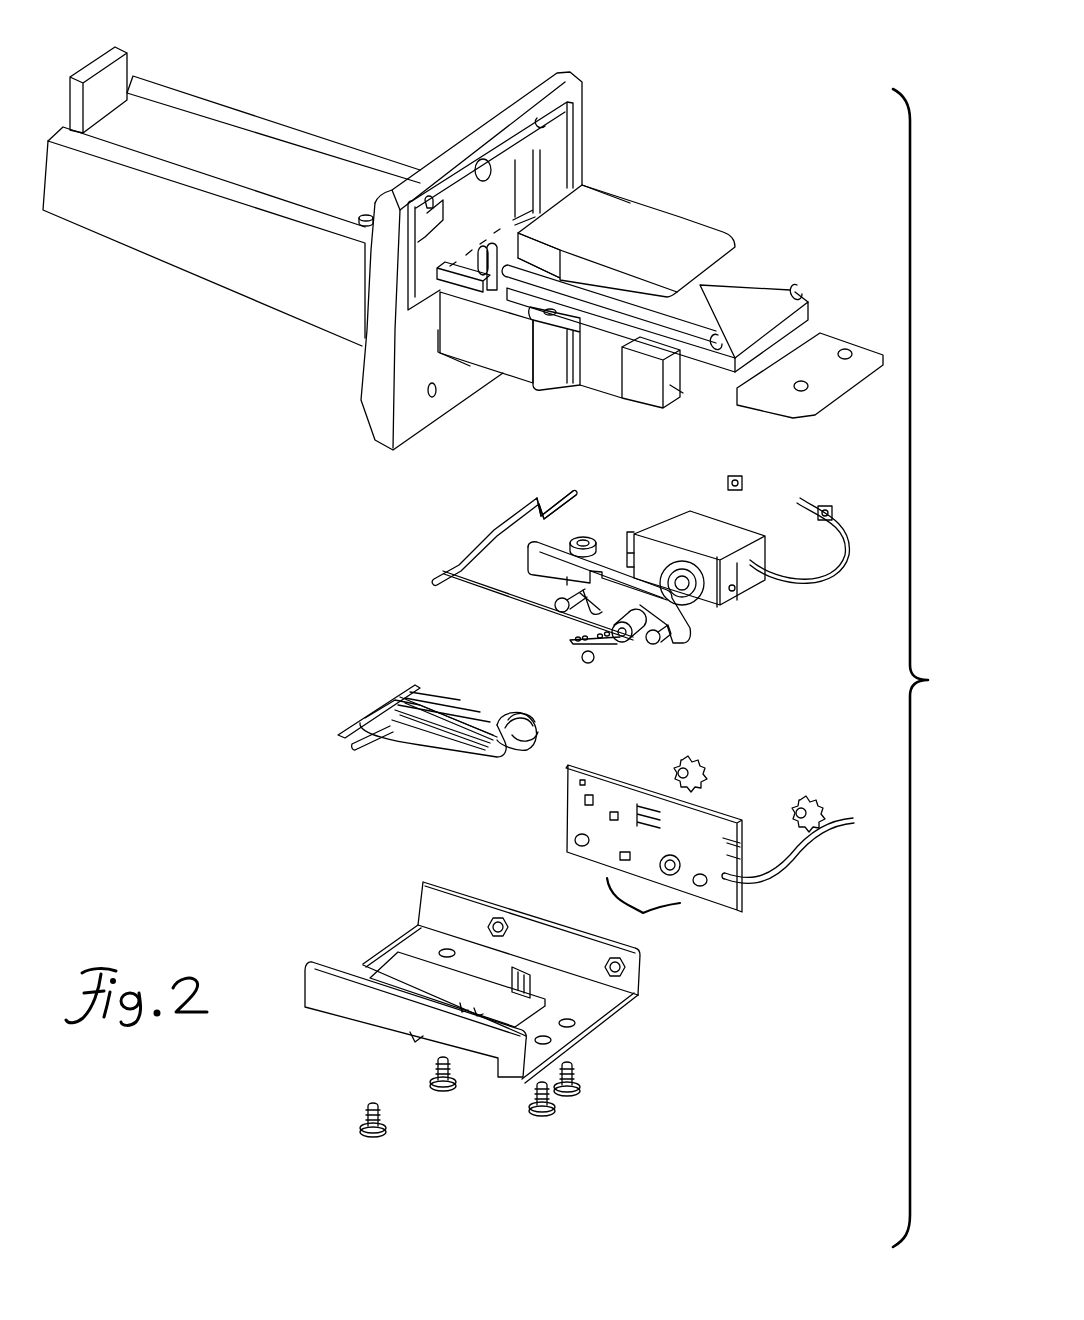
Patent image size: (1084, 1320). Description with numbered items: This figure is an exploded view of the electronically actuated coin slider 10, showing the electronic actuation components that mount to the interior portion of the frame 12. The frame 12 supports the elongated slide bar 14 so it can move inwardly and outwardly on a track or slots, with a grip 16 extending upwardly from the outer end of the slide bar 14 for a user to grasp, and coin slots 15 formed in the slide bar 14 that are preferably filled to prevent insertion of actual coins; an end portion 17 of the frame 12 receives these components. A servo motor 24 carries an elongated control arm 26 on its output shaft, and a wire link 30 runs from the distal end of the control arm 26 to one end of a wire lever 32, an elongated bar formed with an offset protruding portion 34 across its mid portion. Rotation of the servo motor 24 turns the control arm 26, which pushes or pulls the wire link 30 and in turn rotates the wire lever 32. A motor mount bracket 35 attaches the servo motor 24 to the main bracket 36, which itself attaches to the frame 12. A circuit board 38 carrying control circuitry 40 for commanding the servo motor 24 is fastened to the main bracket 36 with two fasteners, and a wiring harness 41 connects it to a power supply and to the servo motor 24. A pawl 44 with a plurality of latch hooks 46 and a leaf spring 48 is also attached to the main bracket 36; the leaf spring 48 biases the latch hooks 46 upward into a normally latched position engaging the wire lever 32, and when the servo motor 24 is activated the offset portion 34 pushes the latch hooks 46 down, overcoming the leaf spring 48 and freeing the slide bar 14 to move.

The electronically actuated coin slider 10 is at (928, 668).
The frame 12 is at (193, 257).
The slide bar 14 is at (200, 135).
The coin slots 15 is at (367, 214).
The grip 16 is at (96, 62).
The mounting frame 17 is at (525, 98).
The servo motor 24 is at (668, 532).
The control arm 26 is at (628, 648).
The wire link 30 is at (503, 597).
The wire lever 32 is at (568, 490).
The offset protruding portion 34 is at (475, 527).
The motor mount bracket 35 is at (678, 636).
The main bracket 36 is at (372, 960).
The circuit board 38 is at (730, 893).
The control circuitry 40 is at (643, 913).
The wiring harness 41 is at (815, 842).
The pawl 44 is at (392, 803).
The latch hooks 46 is at (530, 707).
The leaf spring 48 is at (372, 718).